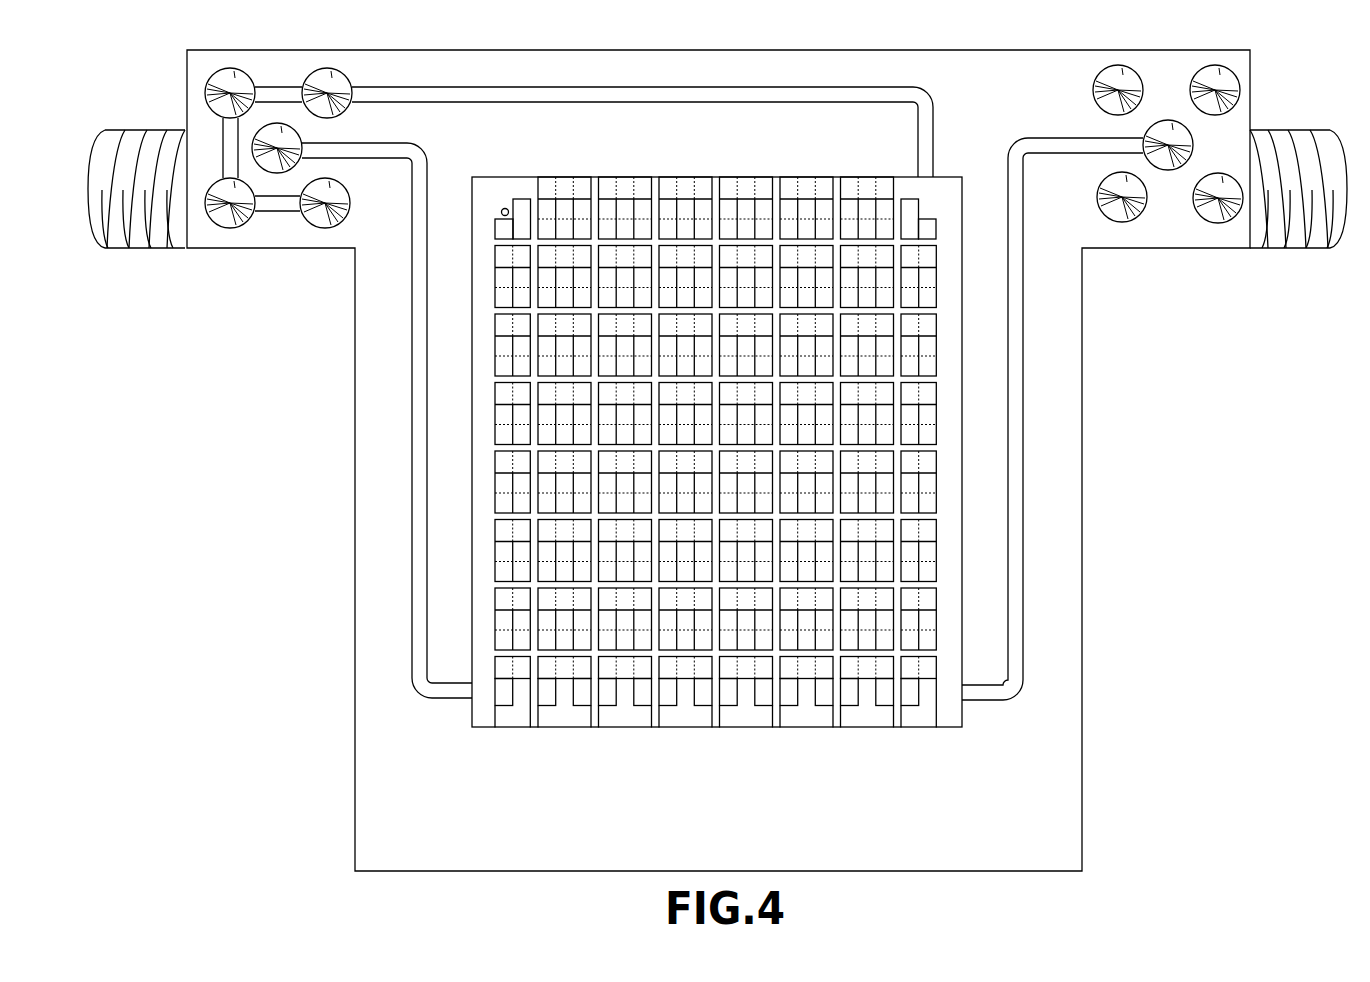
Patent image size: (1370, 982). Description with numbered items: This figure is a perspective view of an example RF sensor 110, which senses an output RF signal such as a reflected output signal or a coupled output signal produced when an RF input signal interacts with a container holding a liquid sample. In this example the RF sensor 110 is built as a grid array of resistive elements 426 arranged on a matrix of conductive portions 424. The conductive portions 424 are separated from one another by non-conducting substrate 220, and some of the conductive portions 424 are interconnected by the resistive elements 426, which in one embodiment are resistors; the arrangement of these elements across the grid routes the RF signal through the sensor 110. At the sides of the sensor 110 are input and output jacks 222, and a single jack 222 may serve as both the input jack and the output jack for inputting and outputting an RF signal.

The RF sensor 110 is at (735, 31).
The non-conducting substrate 220 is at (1050, 790).
The input and output jack 222 is at (126, 148).
The conductive portions 424 is at (412, 495).
The resistive elements 426 is at (937, 470).